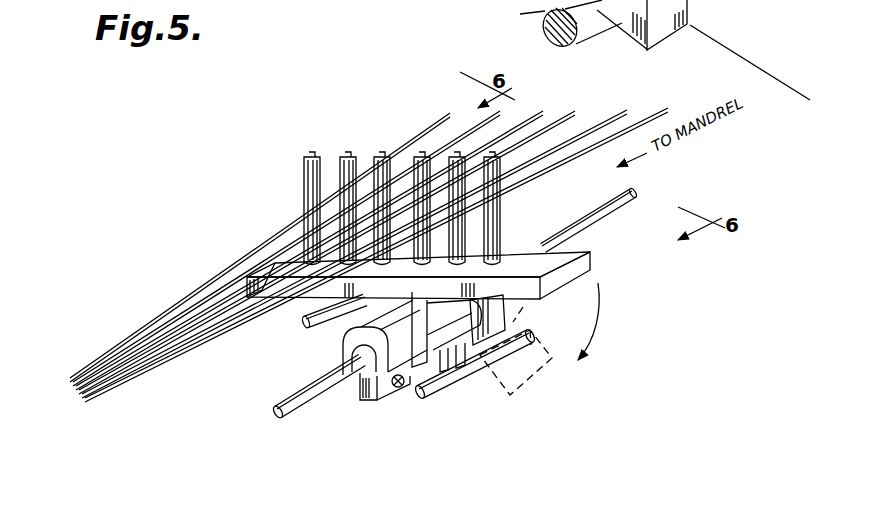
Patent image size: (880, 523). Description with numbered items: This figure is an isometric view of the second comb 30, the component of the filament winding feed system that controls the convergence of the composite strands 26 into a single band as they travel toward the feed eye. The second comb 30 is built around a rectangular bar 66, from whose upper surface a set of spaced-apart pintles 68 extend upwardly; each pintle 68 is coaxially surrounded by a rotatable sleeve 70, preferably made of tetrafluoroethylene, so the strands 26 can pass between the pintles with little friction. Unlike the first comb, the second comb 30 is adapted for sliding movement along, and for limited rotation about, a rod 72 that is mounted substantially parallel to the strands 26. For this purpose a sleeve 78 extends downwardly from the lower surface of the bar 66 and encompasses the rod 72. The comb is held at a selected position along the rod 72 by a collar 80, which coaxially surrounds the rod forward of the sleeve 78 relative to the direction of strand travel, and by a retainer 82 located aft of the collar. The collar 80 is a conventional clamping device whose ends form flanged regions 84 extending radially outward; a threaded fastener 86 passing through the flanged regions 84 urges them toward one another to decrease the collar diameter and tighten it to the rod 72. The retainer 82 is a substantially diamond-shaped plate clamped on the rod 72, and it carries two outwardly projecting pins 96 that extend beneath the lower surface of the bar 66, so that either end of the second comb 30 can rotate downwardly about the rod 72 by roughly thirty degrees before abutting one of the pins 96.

The composite strands 26 is at (133, 332).
The second comb 30 is at (294, 138).
The rectangular bar 66 is at (590, 268).
The pintles 68 is at (349, 152).
The rotatable sleeve 70 is at (367, 205).
The rod 72 is at (305, 402).
The sleeve 78 is at (402, 386).
The collar 80 is at (342, 398).
The retainer 82 is at (548, 306).
The flanged regions 84 is at (380, 402).
The threaded fastener 86 is at (400, 388).
The pins 96 is at (316, 326).